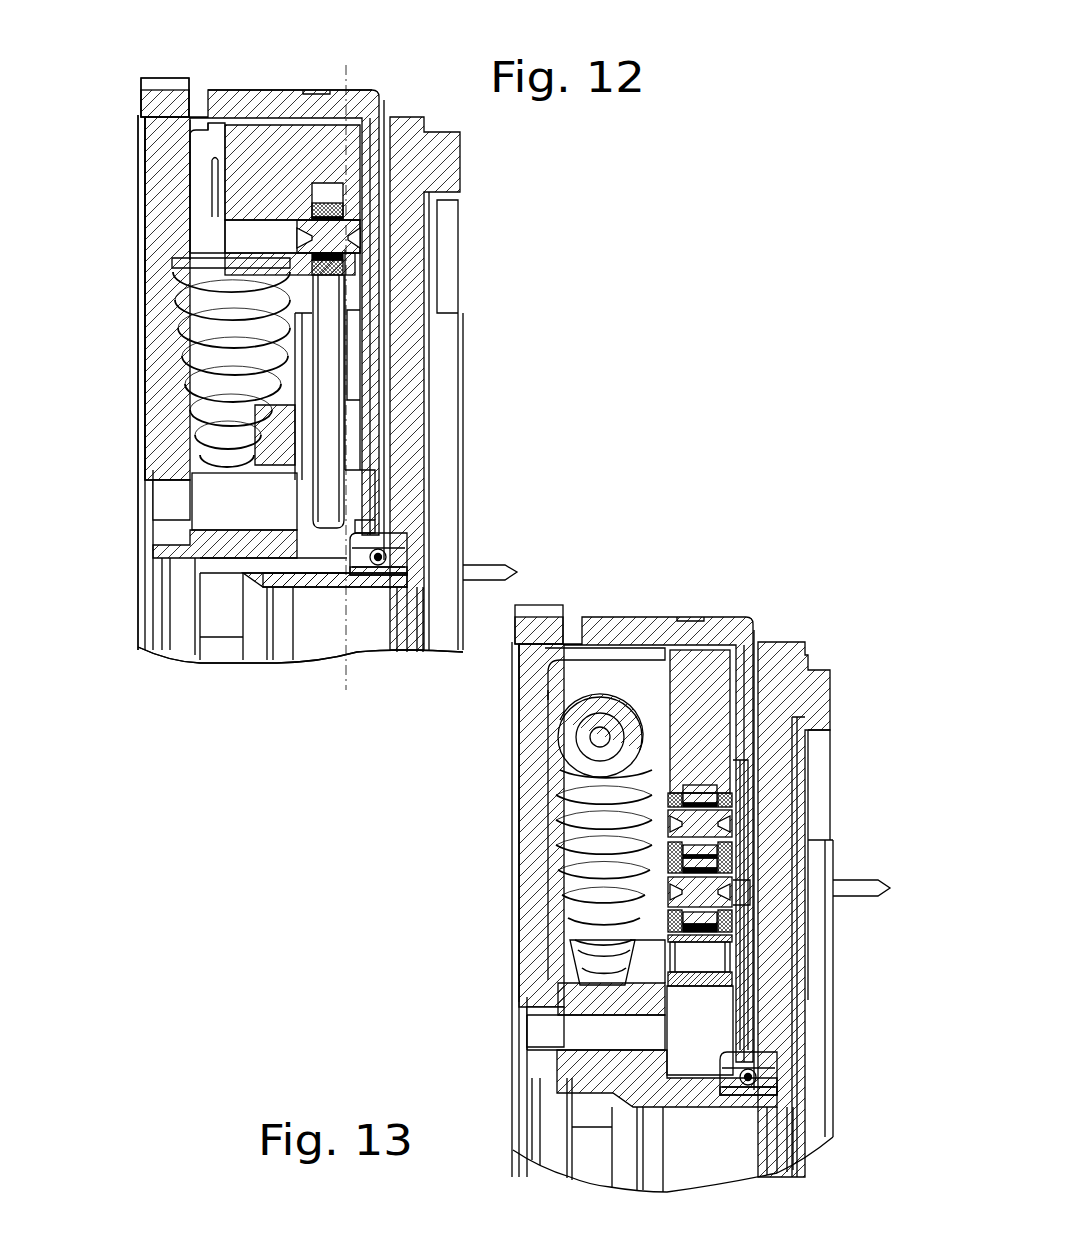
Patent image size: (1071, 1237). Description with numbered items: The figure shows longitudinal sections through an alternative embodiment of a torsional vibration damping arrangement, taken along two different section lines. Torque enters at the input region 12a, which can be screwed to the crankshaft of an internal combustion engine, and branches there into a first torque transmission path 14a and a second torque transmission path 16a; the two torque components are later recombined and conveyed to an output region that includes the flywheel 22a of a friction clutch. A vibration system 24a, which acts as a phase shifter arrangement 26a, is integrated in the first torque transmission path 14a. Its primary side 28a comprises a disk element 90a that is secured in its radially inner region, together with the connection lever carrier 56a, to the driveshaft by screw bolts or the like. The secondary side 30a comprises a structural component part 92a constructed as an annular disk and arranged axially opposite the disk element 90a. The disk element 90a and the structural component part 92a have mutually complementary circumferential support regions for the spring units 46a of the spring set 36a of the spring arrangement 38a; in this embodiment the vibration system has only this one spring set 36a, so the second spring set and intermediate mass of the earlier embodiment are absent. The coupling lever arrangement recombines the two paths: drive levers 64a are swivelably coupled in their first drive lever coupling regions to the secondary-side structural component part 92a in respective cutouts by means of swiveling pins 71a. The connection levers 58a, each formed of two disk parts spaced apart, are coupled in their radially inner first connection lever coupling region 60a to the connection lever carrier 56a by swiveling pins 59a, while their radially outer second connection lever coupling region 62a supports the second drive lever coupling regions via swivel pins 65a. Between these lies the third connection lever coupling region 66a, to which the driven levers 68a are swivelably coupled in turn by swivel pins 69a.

In FIG. 12, the input region 12a is at (122, 488).
In FIG. 12, the first torque transmission path 14a is at (108, 198).
In FIG. 12, the second torque transmission path 16a is at (150, 673).
In FIG. 13, the flywheel 22a is at (781, 840).
In FIG. 12, the vibration system 24a is at (244, 62).
In FIG. 12, the phase shifter arrangement 26a is at (126, 66).
In FIG. 12, the primary side 28a is at (126, 297).
In FIG. 12, the secondary side 30a is at (398, 157).
In FIG. 12, the spring set 36a is at (176, 236).
In FIG. 12, the spring arrangement 38a is at (151, 273).
In FIG. 12, the spring units 46a is at (205, 320).
In FIG. 12, the connection lever carrier 56a is at (255, 495).
In FIG. 13, the connection lever carrier 56a is at (597, 1070).
In FIG. 13, the connection levers 58a is at (720, 858).
In FIG. 13, the swiveling pins 59a is at (712, 950).
In FIG. 13, the first connection lever coupling region 60a is at (655, 983).
In FIG. 13, the second connection lever coupling region 62a is at (768, 808).
In FIG. 13, the drive levers 64a is at (700, 790).
In FIG. 13, the swivel pins 65a is at (653, 840).
In FIG. 13, the third connection lever coupling region 66a is at (672, 958).
In FIG. 13, the driven levers 68a is at (650, 933).
In FIG. 13, the swivel pin 69a is at (735, 930).
In FIG. 12, the swiveling pins 71a is at (330, 241).
In FIG. 12, the disk element 90a is at (172, 378).
In FIG. 13, the disk element 90a is at (512, 810).
In FIG. 12, the structural component part 92a is at (303, 145).
In FIG. 13, the structural component part 92a is at (716, 716).